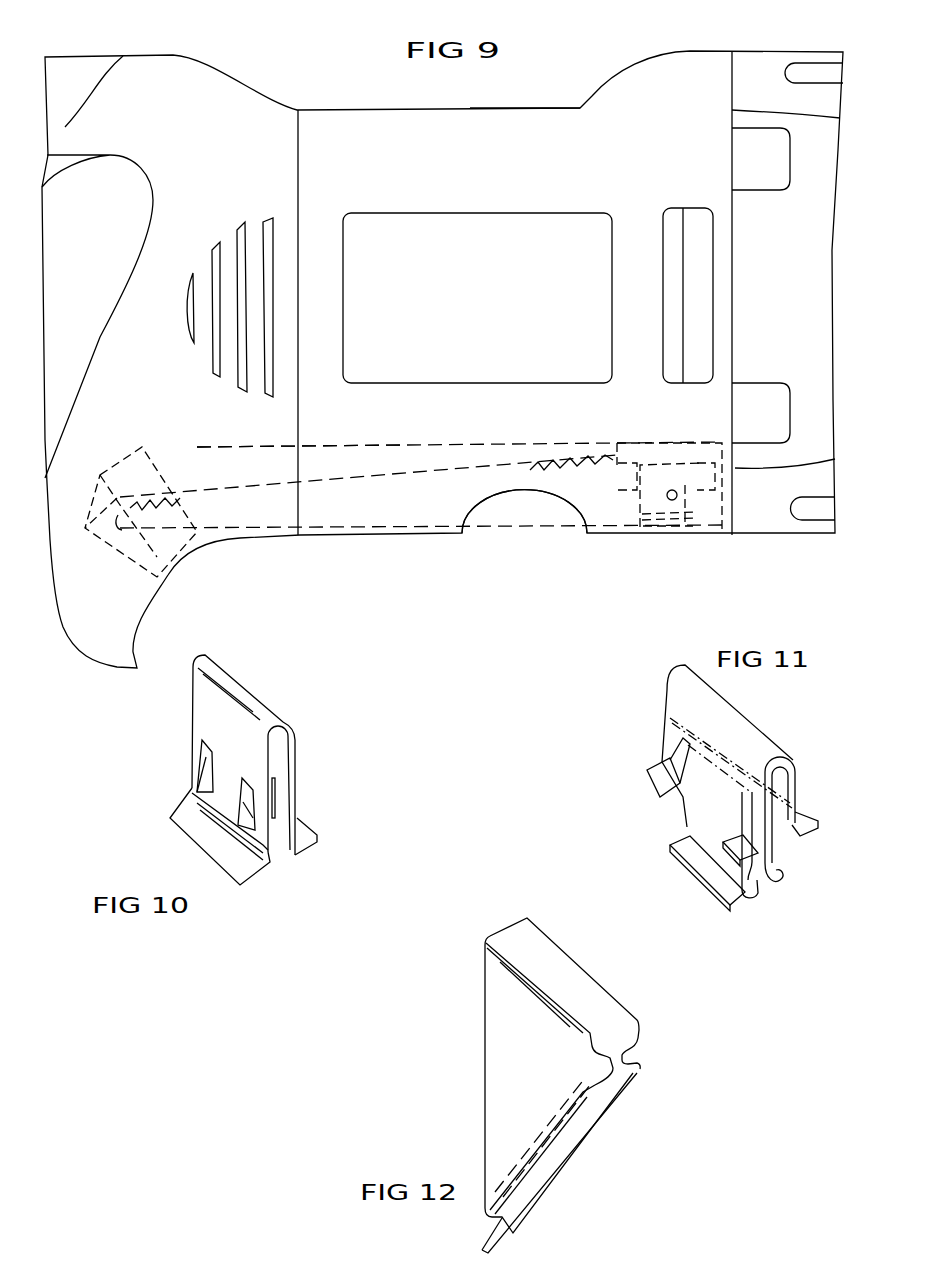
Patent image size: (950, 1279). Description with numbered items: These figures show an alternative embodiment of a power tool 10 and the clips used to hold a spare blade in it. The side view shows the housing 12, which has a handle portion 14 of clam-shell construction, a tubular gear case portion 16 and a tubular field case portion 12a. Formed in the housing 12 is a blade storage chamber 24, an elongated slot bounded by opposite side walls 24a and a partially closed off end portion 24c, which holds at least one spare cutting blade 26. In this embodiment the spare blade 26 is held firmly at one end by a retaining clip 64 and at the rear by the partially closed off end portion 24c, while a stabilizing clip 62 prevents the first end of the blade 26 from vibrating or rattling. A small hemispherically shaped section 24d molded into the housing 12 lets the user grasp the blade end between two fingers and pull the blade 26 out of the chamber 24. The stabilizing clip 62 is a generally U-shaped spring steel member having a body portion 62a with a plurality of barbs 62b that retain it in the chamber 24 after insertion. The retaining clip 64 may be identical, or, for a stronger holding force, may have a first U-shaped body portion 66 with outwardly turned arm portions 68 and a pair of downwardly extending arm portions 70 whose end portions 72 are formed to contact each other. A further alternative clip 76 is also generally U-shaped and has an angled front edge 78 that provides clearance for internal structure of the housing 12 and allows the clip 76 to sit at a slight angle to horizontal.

In FIG. 9, the power tool 10 is at (82, 50).
In FIG. 9, the housing 12 is at (349, 130).
In FIG. 9, the field case portion 12a is at (532, 137).
In FIG. 9, the handle portion 14 is at (123, 56).
In FIG. 9, the gear case portion 16 is at (777, 517).
In FIG. 9, the blade storage chamber 24 is at (463, 443).
In FIG. 9, the side walls 24a is at (197, 447).
In FIG. 9, the partially closed off end portion 24c is at (140, 557).
In FIG. 9, the hemispherically shaped section 24d is at (570, 513).
In FIG. 9, the spare cutting blade 26 is at (487, 520).
In FIG. 9, the stabilizing clip 62 is at (140, 448).
In FIG. 10, the stabilizing clip 62 is at (242, 770).
In FIG. 10, the body portion 62a is at (205, 703).
In FIG. 10, the barbs 62b is at (243, 790).
In FIG. 9, the retaining clip 64 is at (617, 480).
In FIG. 11, the retaining clip 64 is at (709, 801).
In FIG. 11, the first U-shaped body portion 66 is at (725, 720).
In FIG. 11, the outwardly turned arm portions 68 is at (647, 773).
In FIG. 11, the downwardly extending arm portions 70 is at (707, 818).
In FIG. 11, the end portions 72 is at (733, 911).
In FIG. 12, the clip 76 is at (513, 1085).
In FIG. 12, the angled front edge 78 is at (483, 1063).